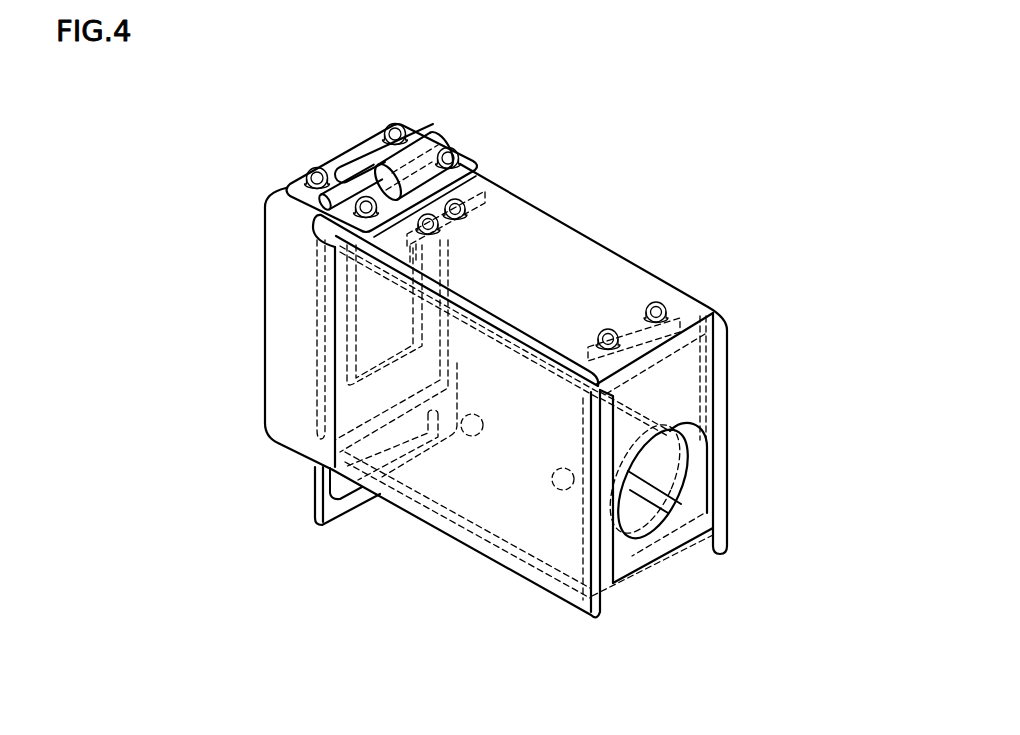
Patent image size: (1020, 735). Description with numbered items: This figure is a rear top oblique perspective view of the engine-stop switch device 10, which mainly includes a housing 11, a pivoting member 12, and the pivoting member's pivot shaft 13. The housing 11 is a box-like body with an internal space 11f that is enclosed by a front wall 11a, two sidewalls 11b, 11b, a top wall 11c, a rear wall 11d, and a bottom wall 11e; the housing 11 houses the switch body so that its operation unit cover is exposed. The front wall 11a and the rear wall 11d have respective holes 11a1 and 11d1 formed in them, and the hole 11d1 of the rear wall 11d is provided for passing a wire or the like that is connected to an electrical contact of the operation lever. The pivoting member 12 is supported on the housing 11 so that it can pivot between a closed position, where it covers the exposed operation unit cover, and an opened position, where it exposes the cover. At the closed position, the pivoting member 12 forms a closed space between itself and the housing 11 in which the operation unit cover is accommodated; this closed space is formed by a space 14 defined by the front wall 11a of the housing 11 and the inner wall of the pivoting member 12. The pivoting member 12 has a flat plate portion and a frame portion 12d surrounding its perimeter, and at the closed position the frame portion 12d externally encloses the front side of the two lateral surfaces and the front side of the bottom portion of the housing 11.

The engine-stop switch device 10 is at (720, 203).
The housing 11 is at (620, 277).
The front wall 11a is at (367, 400).
The hole 11a1 is at (347, 363).
The sidewall 11b is at (500, 510).
The top wall 11c is at (558, 240).
The rear wall 11d is at (695, 386).
The hole 11d1 is at (680, 455).
The bottom wall 11e is at (655, 562).
The internal space 11f is at (528, 456).
The pivoting member 12 is at (285, 320).
The frame portion 12d is at (292, 180).
The pivot shaft 13 is at (434, 127).
The space 14 is at (293, 392).